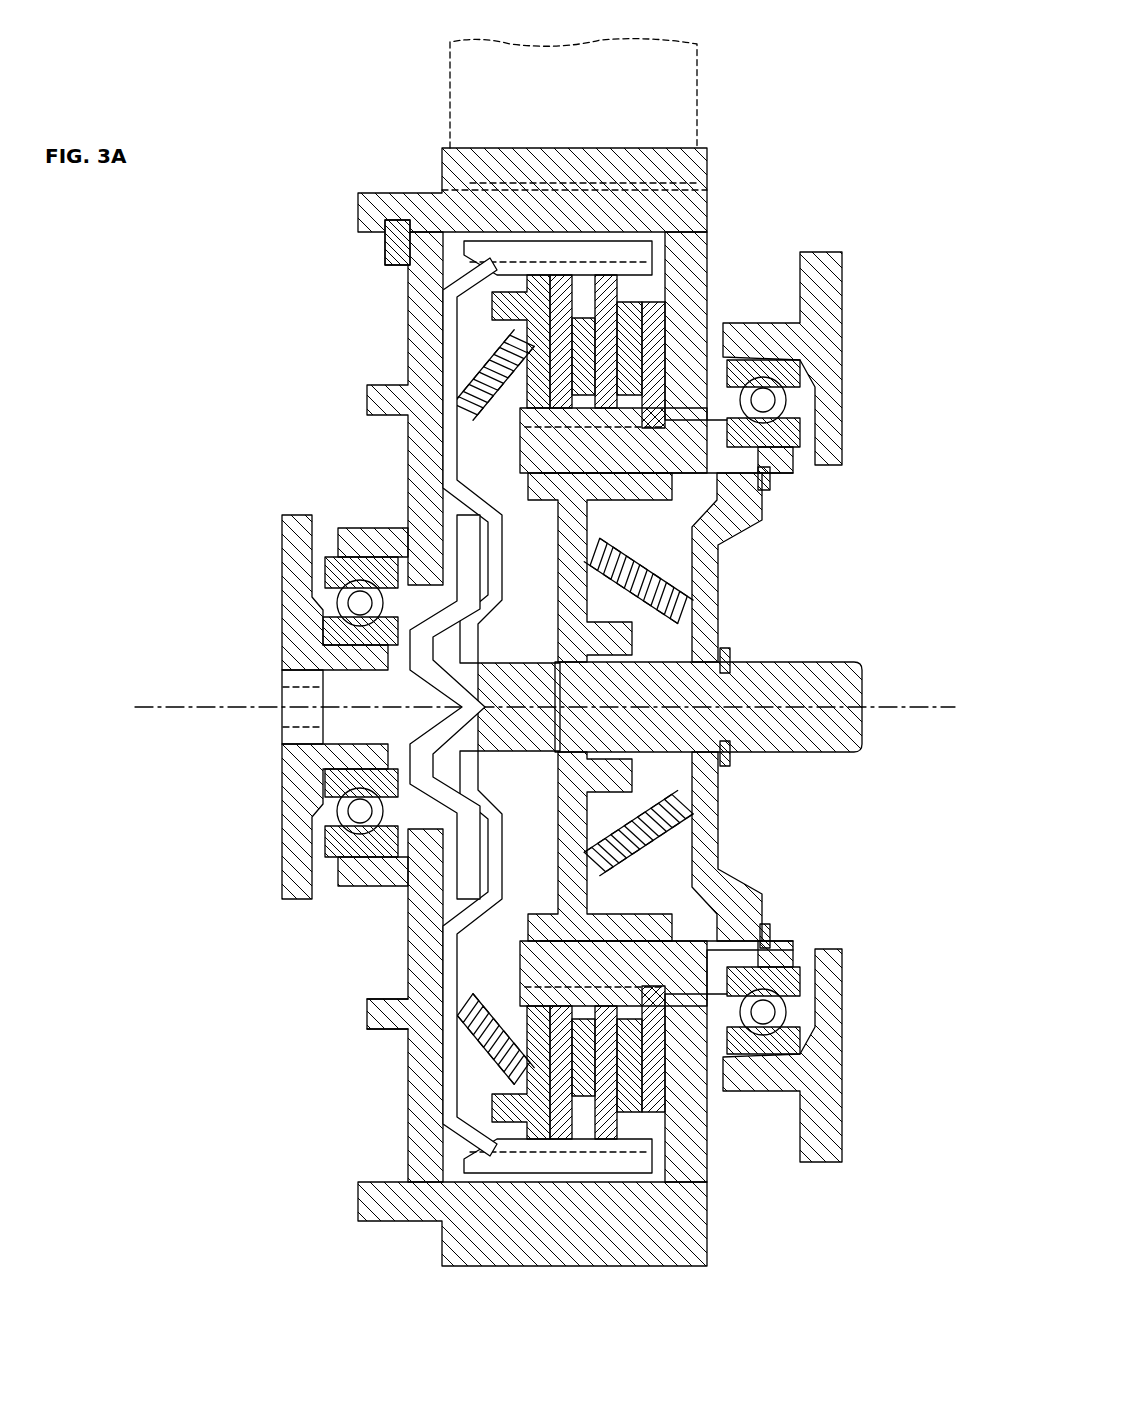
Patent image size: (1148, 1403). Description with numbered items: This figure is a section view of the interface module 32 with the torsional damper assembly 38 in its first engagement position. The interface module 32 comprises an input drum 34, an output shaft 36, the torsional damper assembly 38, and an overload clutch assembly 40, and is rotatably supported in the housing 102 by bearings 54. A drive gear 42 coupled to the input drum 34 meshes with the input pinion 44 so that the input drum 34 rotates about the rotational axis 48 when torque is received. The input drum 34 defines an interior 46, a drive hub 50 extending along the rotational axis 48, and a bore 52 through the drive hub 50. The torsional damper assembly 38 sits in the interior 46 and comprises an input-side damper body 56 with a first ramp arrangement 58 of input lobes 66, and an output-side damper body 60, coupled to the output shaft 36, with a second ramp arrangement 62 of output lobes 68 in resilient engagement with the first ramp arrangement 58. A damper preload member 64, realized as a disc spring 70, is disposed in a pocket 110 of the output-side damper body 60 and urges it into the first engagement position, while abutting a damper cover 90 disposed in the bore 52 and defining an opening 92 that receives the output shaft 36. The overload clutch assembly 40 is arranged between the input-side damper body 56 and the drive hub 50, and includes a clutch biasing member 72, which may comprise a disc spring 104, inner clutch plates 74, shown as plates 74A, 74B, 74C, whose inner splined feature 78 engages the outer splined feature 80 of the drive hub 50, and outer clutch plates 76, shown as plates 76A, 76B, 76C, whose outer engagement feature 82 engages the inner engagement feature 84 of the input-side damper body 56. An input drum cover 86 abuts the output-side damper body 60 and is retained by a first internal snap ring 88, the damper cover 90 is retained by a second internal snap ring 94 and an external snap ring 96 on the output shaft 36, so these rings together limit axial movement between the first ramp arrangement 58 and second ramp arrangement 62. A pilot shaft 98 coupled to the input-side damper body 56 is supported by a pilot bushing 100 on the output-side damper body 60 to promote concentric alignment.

The interface module 32 is at (278, 405).
The input drum 34 is at (708, 252).
The output shaft 36 is at (797, 662).
The torsional damper assembly 38 is at (400, 900).
The overload clutch assembly 40 is at (738, 292).
The drive gear 42 is at (466, 142).
The input pinion 44 is at (455, 86).
The interior 46 is at (445, 262).
The rotational axis 48 is at (185, 700).
The drive hub 50 is at (540, 958).
The bore 52 is at (717, 907).
The bearings 54 is at (790, 440).
The input-side damper body 56 is at (495, 1143).
The first ramp arrangement 58 is at (415, 815).
The output-side damper body 60 is at (690, 933).
The second ramp arrangement 62 is at (495, 762).
The damper preload member 64 is at (660, 545).
The input lobes 66 is at (560, 525).
The output lobes 68 is at (475, 625).
The disc spring 70 is at (640, 575).
The clutch biasing member 72 is at (470, 425).
The inner clutch plate 74 is at (500, 263).
The inner clutch plate 74A is at (455, 240).
The inner clutch plate 74B is at (575, 330).
The inner clutch plate 74C is at (605, 360).
The outer clutch plate 76 is at (666, 1124).
The outer clutch plate 76A is at (603, 1135).
The outer clutch plate 76B is at (643, 1135).
The outer clutch plate 76C is at (557, 1137).
The inner splined feature 78 is at (460, 1030).
The outer splined feature 80 is at (540, 455).
The outer engagement feature 82 is at (705, 192).
The inner engagement feature 84 is at (490, 265).
The input drum cover 86 is at (420, 320).
The first internal snap ring 88 is at (385, 250).
The damper cover 90 is at (720, 830).
The opening 92 is at (722, 745).
The second internal snap ring 94 is at (772, 935).
The external snap ring 96 is at (732, 756).
The pilot shaft 98 is at (455, 697).
The pilot bushing 100 is at (560, 712).
The housing 102 is at (290, 520).
The disc spring 104 is at (440, 982).
The pocket 110 is at (685, 630).